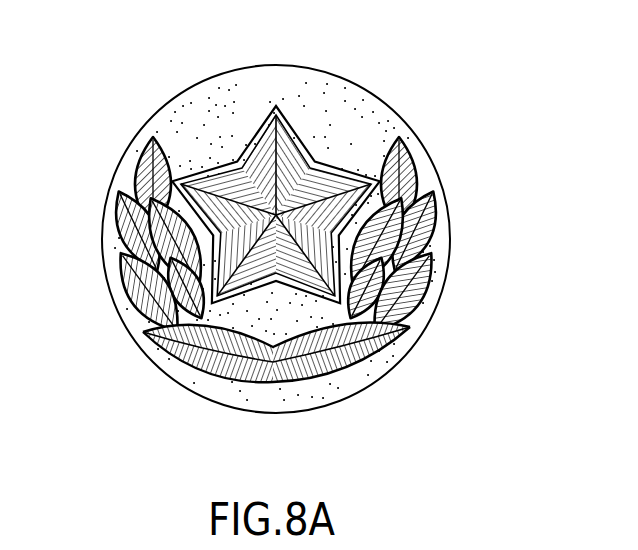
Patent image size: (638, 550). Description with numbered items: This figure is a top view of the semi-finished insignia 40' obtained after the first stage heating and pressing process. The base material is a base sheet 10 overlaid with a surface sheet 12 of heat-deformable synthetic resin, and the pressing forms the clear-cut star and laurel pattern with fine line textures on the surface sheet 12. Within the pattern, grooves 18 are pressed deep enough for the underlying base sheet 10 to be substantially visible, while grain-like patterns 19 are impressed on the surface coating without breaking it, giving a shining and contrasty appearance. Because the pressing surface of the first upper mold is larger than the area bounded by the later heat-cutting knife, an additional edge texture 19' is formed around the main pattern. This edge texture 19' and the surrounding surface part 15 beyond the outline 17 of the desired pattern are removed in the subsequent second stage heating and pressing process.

The semi-finished insignia 40' is at (266, 230).
The base sheet 10 is at (180, 128).
The surface sheet 12 is at (233, 382).
The cutaway part 15 is at (343, 385).
The edge 17 is at (128, 224).
The groove 18 is at (421, 243).
The grain-like pattern 19 is at (214, 174).
The edge texture 19' is at (230, 194).